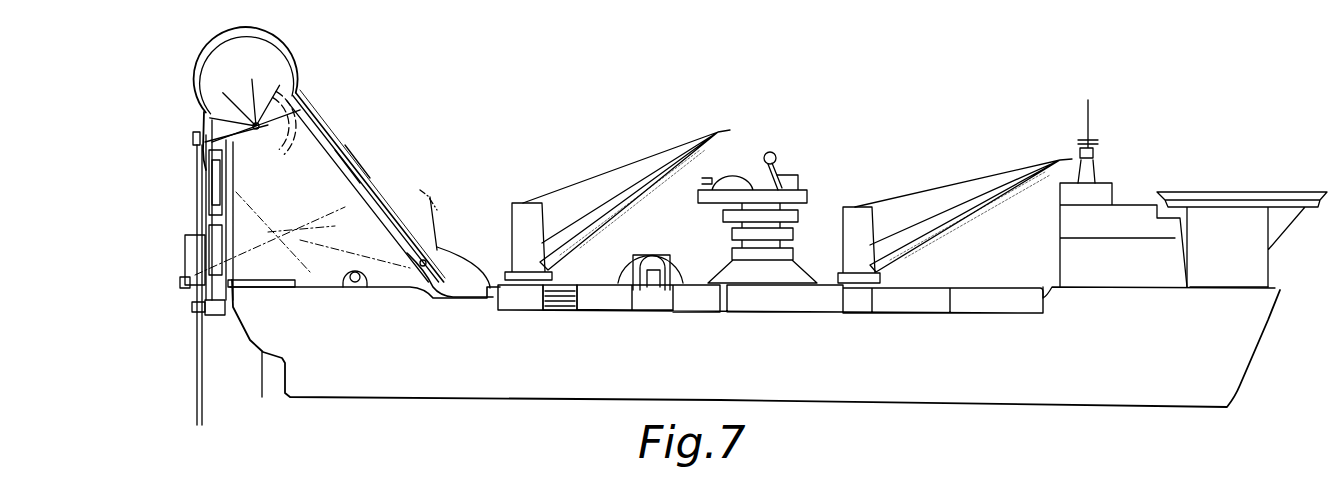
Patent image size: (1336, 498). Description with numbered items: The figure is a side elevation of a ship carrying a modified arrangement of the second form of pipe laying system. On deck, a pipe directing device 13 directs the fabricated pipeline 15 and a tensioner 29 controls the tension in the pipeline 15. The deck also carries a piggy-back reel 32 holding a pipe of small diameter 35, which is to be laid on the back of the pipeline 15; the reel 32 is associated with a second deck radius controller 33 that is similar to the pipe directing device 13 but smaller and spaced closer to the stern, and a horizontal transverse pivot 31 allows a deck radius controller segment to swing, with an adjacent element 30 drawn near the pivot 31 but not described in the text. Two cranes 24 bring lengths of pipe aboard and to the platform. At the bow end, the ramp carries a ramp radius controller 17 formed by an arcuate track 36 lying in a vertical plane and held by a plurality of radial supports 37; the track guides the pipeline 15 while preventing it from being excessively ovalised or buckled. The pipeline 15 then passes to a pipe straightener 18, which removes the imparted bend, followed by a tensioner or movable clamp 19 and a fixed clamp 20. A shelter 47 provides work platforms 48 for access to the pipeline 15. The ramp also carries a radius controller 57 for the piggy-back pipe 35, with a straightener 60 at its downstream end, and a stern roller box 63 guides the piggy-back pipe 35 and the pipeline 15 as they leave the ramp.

The pipe directing device 13 is at (430, 209).
The pipeline 15 is at (205, 383).
The ramp radius controller 17 is at (292, 62).
The pipe straightener 18 is at (194, 160).
The tensioner or movable clamp 19 is at (190, 223).
The fixed clamp 20 is at (192, 298).
The cranes 24 is at (670, 162).
The tensioner 29 is at (563, 283).
The curved chute 30 is at (457, 250).
The horizontal transverse pivot 31 is at (470, 275).
The piggy-back reel 32 is at (655, 247).
The second deck radius controller 33 is at (430, 300).
The pipe of small diameter 35 is at (345, 168).
The arcuate track 36 is at (256, 74).
The radial supports 37 is at (294, 120).
The shelter 47 is at (184, 246).
The work platforms 48 is at (185, 279).
The radius controller 57 is at (203, 100).
The straightener 60 is at (193, 137).
The stern roller box 63 is at (195, 310).